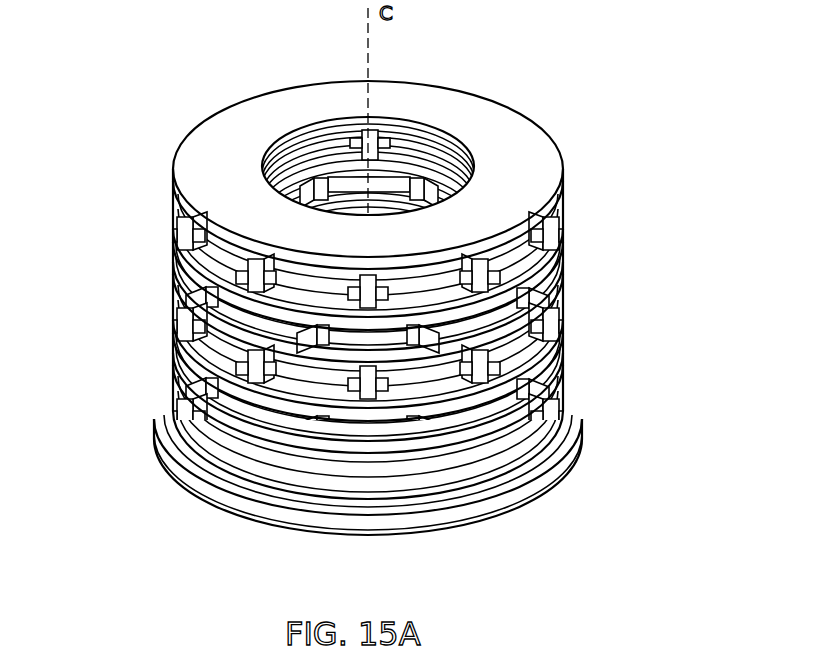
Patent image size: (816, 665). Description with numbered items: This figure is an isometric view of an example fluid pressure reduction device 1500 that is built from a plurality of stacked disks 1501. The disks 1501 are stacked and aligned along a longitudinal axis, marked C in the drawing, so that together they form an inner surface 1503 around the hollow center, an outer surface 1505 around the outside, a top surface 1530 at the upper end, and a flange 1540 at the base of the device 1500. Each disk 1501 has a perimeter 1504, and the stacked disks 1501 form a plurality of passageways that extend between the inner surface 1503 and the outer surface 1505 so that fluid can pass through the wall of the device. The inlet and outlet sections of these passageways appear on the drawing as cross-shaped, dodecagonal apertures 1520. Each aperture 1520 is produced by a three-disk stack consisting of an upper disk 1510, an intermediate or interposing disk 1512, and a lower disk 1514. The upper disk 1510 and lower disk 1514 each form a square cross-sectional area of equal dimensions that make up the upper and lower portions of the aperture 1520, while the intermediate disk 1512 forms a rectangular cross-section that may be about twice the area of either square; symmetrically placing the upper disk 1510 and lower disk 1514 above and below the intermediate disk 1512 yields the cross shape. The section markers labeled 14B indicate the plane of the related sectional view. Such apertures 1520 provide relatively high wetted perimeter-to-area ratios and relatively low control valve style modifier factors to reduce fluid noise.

The fluid pressure reduction device 1500 is at (394, 312).
The stacked disks 1501 is at (394, 255).
The inner surface 1503 is at (343, 120).
The perimeter 1504 is at (170, 362).
The outer surface 1505 is at (567, 322).
The upper disk 1510 is at (210, 243).
The intermediate disk 1512 is at (195, 250).
The lower disk 1514 is at (203, 260).
The dodecagonal apertures 1520 is at (173, 383).
The top surface 1530 is at (212, 125).
The flange 1540 is at (170, 432).
The section view indicator 14B is at (168, 210).